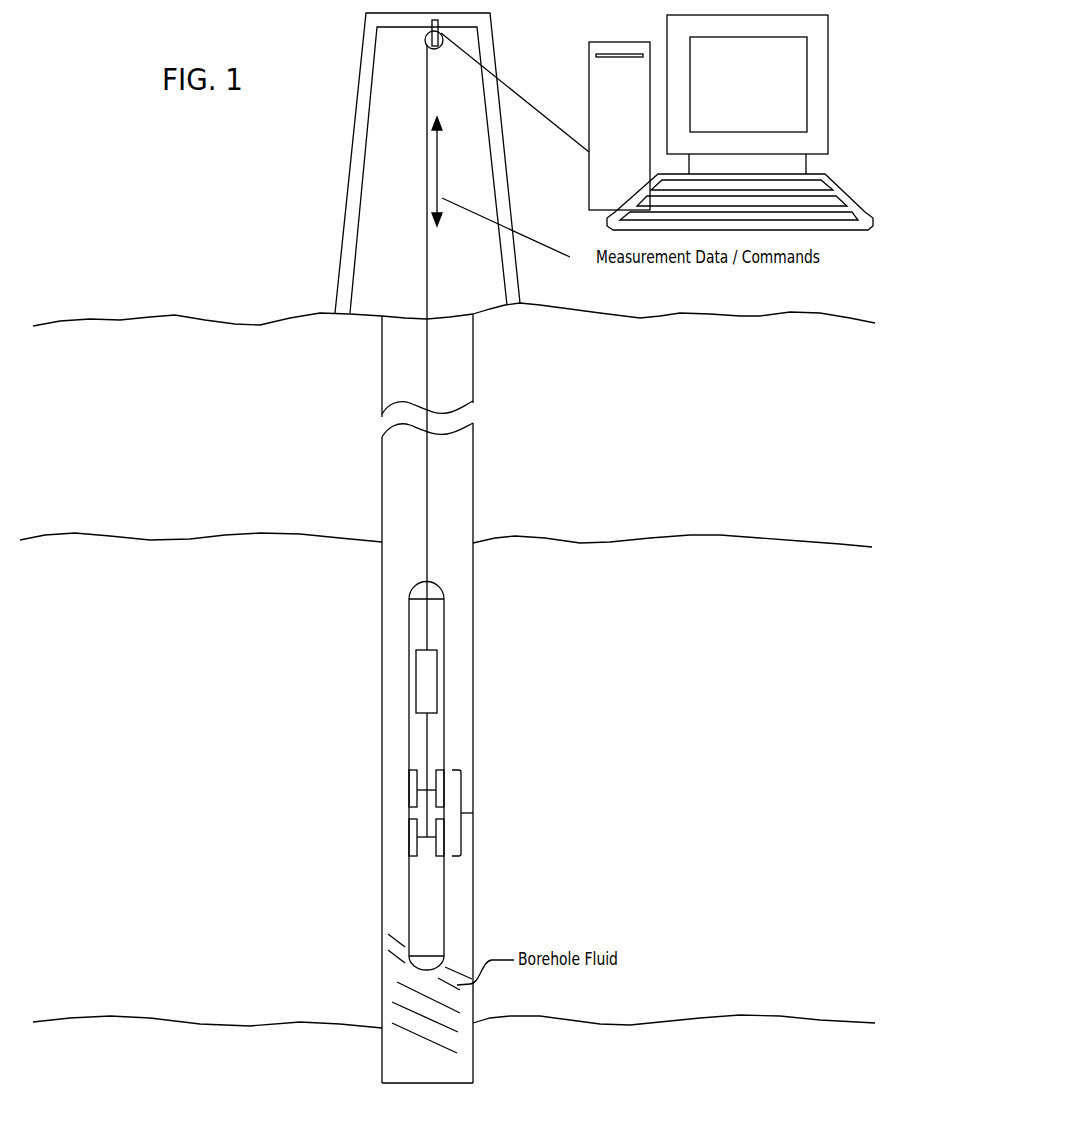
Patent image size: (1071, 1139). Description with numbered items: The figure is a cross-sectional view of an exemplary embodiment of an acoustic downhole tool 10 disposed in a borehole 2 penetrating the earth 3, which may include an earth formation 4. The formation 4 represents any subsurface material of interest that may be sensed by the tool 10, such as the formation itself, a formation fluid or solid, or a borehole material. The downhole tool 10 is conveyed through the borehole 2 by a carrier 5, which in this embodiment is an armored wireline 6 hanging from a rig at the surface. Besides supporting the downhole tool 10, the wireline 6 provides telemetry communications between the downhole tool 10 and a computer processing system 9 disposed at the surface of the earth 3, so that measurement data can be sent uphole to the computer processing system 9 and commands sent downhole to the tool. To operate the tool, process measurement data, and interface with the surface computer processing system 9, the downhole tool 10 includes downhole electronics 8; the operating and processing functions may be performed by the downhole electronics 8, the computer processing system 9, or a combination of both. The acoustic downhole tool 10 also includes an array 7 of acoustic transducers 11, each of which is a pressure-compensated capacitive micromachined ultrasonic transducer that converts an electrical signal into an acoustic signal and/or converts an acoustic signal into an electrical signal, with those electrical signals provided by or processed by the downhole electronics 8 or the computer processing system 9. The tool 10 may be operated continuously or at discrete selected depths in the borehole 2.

The borehole 2 is at (382, 352).
The earth 3 is at (120, 383).
The earth formation 4 is at (157, 715).
The carrier 5 is at (427, 477).
The armored wireline 6 is at (427, 277).
The array of acoustic transducers 7 is at (475, 813).
The downhole electronics 8 is at (416, 670).
The computer processing system 9 is at (589, 66).
The acoustic downhole tool 10 is at (409, 627).
The acoustic transducer 11 is at (409, 833).